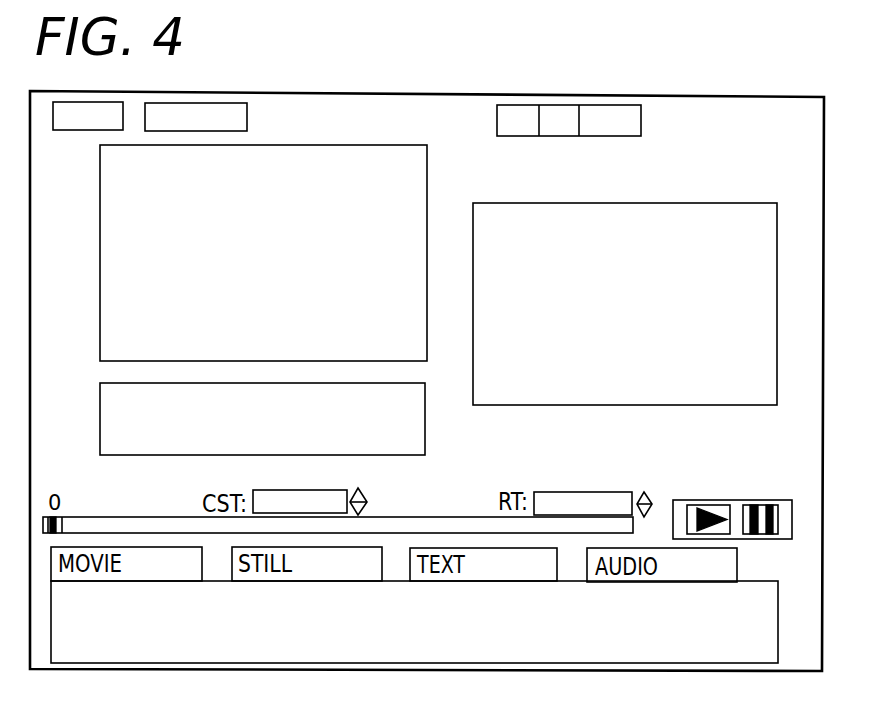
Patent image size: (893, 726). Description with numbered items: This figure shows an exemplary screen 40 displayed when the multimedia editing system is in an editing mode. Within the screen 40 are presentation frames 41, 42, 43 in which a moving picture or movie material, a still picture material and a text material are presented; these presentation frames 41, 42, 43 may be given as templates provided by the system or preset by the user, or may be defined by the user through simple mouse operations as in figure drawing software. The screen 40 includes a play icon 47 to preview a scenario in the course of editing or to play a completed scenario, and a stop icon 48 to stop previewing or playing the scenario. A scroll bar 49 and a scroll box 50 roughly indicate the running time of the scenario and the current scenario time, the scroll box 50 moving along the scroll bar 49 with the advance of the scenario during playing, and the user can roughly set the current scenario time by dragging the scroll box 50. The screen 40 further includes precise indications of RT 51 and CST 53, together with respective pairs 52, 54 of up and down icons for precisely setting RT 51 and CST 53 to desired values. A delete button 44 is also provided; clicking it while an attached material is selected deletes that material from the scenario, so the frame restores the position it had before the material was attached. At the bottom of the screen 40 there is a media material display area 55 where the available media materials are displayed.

The screen 40 is at (677, 96).
The presentation frame 41 is at (428, 175).
The presentation frame 42 is at (697, 203).
The presentation frame 43 is at (426, 432).
The delete button 44 is at (590, 105).
The play icon 47 is at (712, 500).
The stop icon 48 is at (765, 503).
The scroll bar 49 is at (118, 518).
The scroll box 50 is at (62, 514).
The RT indication 51 is at (588, 490).
The pair of up and down icons 52 is at (648, 492).
The CST indication 53 is at (325, 489).
The pair of up and down icons 54 is at (367, 497).
The media material display area 55 is at (745, 582).